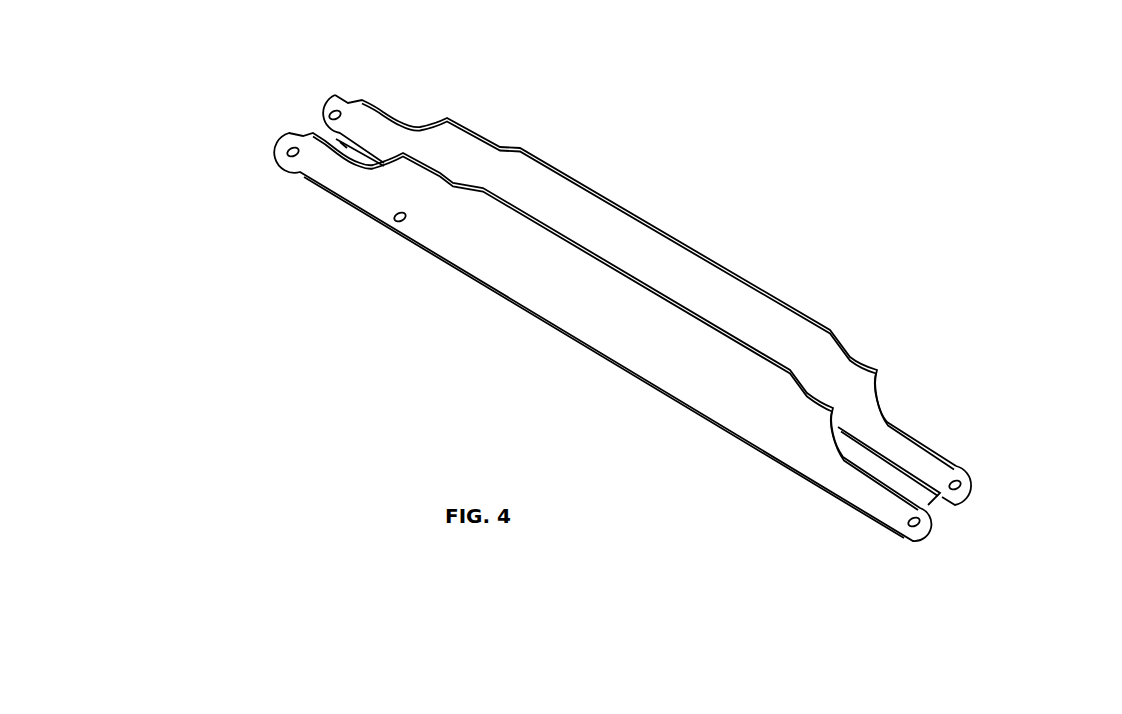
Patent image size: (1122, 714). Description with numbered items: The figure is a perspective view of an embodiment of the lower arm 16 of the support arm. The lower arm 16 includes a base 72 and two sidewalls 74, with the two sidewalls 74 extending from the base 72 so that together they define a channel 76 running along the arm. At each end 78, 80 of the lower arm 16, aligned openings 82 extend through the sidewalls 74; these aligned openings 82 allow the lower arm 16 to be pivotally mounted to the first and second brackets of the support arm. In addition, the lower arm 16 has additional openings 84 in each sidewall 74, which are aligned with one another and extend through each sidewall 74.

The lower arm 16 is at (803, 153).
The base 72 is at (889, 467).
The sidewalls 74 is at (731, 290).
The channel 76 is at (607, 232).
The end 78 is at (260, 99).
The end 80 is at (962, 525).
The aligned openings 82 is at (336, 110).
The additional openings 84 is at (397, 222).